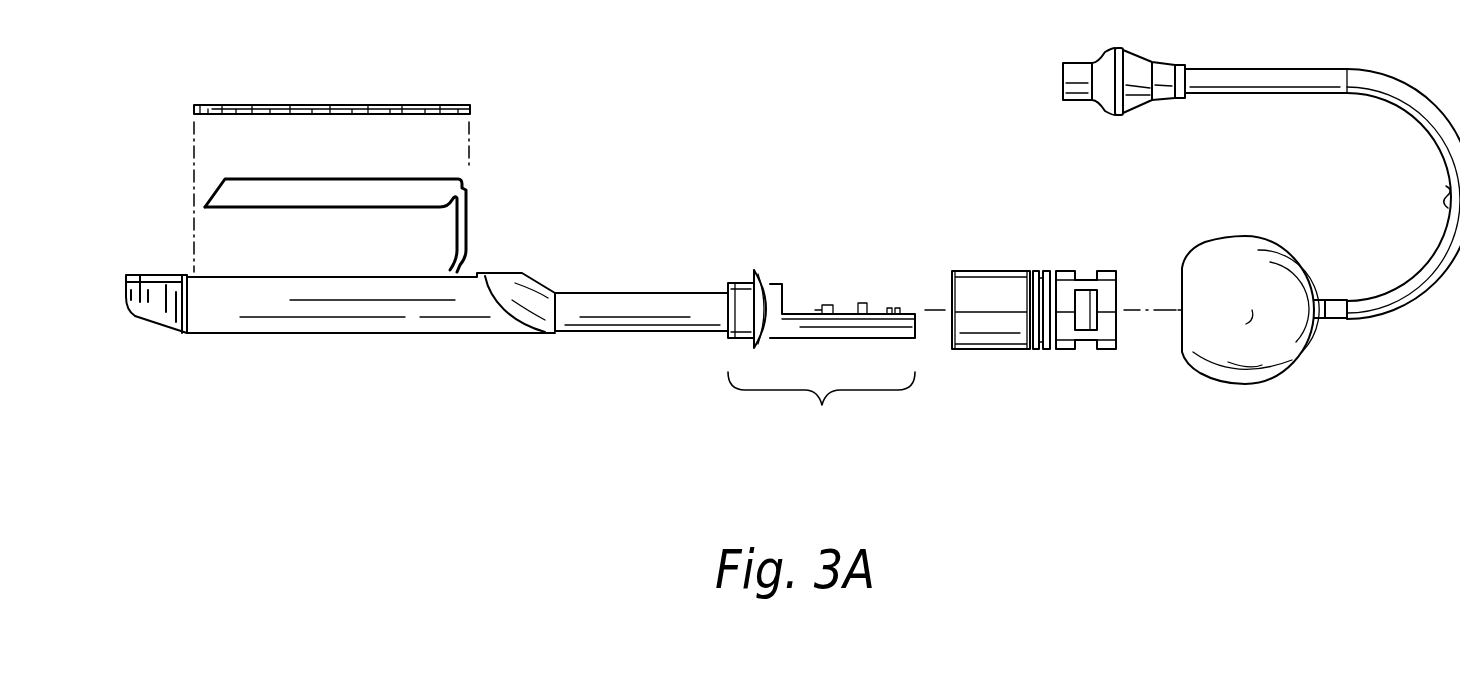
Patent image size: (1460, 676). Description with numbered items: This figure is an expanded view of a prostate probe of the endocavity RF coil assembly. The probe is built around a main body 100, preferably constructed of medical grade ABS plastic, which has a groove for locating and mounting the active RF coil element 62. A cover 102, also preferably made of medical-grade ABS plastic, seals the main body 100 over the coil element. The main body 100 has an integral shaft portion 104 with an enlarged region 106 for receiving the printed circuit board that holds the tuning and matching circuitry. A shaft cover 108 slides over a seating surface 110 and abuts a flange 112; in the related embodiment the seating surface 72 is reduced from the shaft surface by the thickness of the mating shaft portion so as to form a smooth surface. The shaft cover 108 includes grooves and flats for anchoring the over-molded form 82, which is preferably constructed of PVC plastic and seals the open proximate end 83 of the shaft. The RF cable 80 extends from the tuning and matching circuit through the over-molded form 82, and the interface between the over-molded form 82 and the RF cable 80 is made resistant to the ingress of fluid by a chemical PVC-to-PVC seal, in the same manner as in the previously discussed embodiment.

The main body 100 is at (393, 323).
The cover 102 is at (343, 103).
The active RF coil element 62 is at (322, 208).
The integral shaft portion 104 is at (658, 290).
The flange 112 is at (755, 272).
The seating surface 110 is at (778, 284).
The seating surface 72 is at (875, 308).
The enlarged region 106 is at (821, 407).
The shaft cover 108 is at (1003, 325).
The open proximate end 83 is at (1118, 290).
The RF cable 80 is at (1408, 113).
The over-molded form 82 is at (1293, 357).